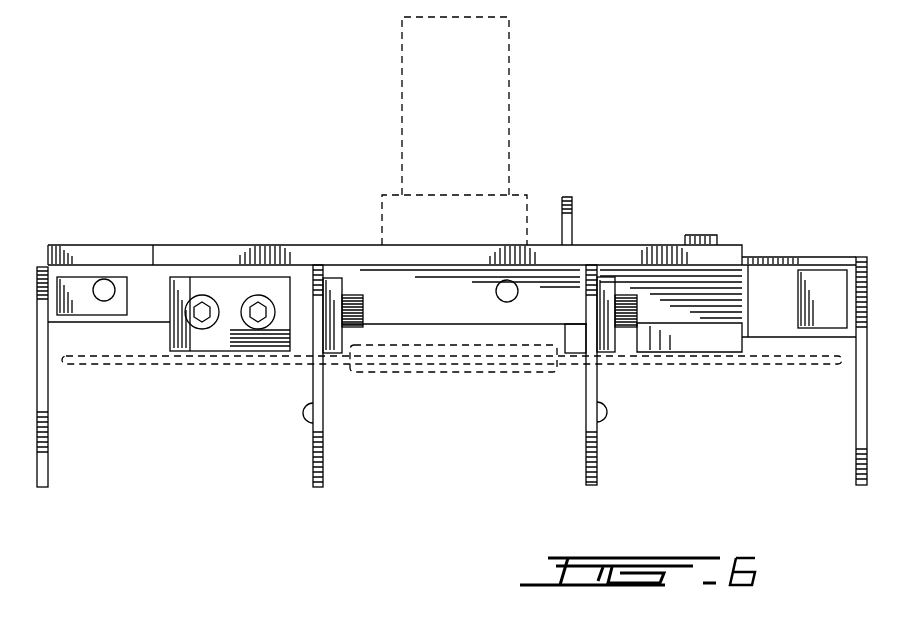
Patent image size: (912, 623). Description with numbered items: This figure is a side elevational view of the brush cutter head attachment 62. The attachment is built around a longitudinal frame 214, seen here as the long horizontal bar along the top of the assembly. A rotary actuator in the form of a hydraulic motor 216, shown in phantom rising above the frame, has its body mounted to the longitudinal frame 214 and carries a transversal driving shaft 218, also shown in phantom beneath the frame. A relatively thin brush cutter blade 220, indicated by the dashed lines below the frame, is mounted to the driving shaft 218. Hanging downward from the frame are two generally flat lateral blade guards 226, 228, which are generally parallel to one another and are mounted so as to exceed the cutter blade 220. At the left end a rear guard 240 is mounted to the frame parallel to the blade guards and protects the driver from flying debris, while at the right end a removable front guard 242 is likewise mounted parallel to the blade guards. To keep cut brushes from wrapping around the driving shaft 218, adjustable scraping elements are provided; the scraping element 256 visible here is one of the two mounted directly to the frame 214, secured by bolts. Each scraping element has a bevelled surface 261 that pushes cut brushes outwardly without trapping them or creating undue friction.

The brush cutter head attachment 62 is at (452, 265).
The longitudinal frame 214 is at (170, 246).
The hydraulic motor 216 is at (492, 127).
The driving shaft 218 is at (485, 332).
The brush cutter blade 220 is at (265, 372).
The lateral blade guard 226 is at (597, 463).
The lateral blade guard 228 is at (323, 463).
The rear guard 240 is at (46, 463).
The front guard 242 is at (856, 453).
The adjustable scraping element 256 is at (233, 337).
The bevelled surface 261 is at (182, 337).